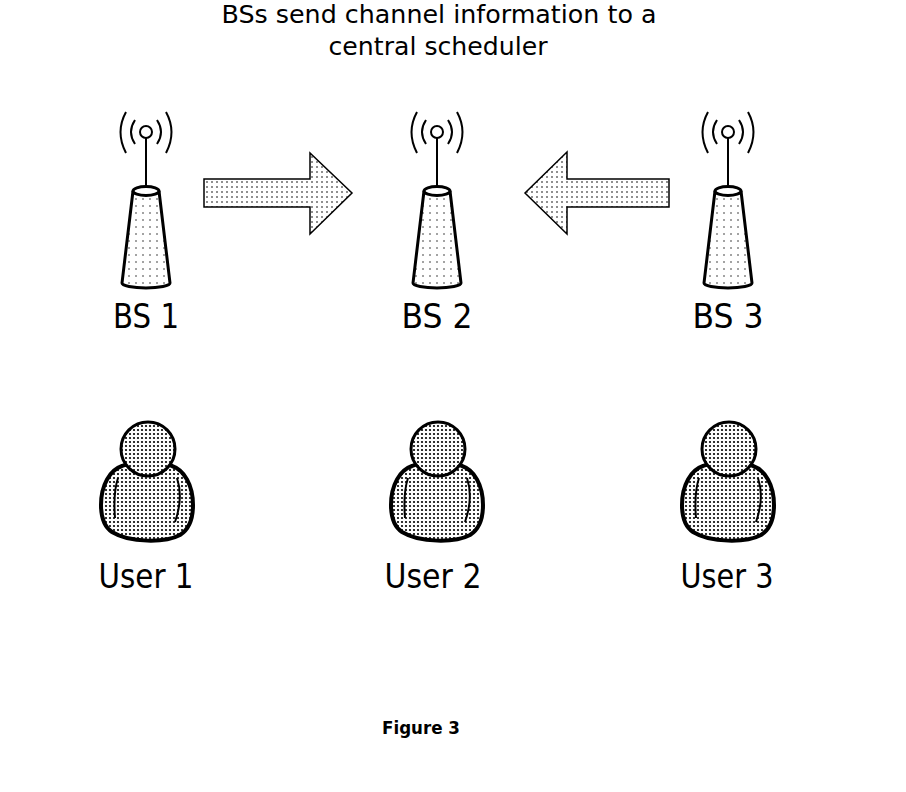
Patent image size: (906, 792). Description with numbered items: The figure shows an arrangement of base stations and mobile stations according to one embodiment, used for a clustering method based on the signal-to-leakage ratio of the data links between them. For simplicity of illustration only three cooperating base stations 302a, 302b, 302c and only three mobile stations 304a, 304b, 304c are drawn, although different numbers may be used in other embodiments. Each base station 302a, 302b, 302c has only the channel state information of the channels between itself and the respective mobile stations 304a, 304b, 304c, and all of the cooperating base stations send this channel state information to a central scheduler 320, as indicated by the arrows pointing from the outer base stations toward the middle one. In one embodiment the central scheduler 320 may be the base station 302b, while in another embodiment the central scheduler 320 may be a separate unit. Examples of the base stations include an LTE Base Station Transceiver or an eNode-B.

The base station 302a is at (122, 258).
The base station 302b is at (413, 262).
The base station 302c is at (708, 233).
The mobile station 304a is at (106, 485).
The mobile station 304b is at (390, 498).
The mobile station 304c is at (682, 497).
The central scheduler 320 is at (495, 177).